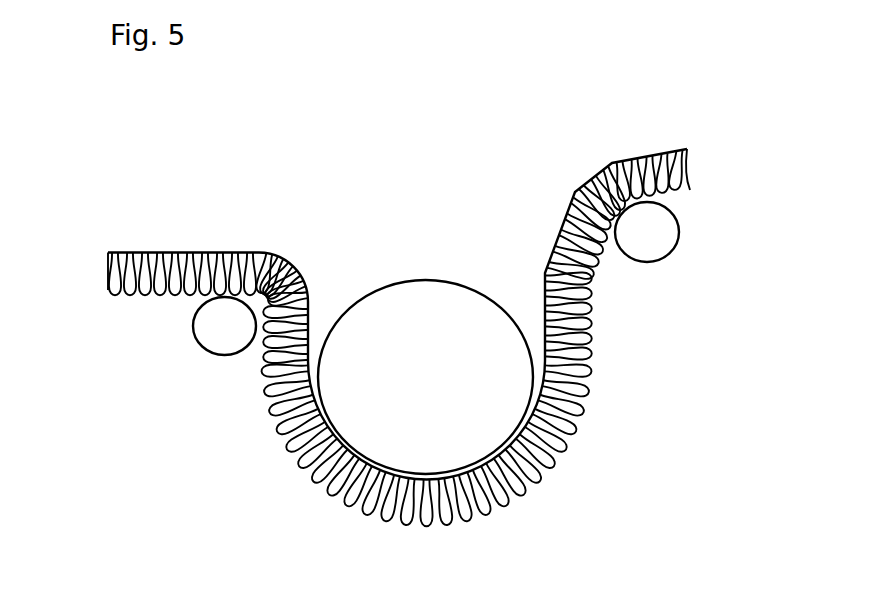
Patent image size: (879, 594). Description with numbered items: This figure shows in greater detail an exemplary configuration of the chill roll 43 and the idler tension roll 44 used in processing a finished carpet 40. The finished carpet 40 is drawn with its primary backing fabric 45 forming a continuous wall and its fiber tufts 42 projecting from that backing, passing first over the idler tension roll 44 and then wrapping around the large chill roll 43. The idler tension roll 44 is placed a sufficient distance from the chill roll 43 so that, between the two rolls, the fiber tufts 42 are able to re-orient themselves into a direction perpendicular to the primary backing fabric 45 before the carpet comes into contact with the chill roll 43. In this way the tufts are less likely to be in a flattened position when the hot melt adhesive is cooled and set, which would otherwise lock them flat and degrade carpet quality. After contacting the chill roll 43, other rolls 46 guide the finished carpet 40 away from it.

The finished carpet 40 is at (359, 337).
The fiber tufts 42 is at (165, 303).
The chill roll 43 is at (433, 278).
The idler tension roll 44 is at (233, 358).
The primary backing fabric 45 is at (201, 244).
The other rolls 46 is at (683, 250).